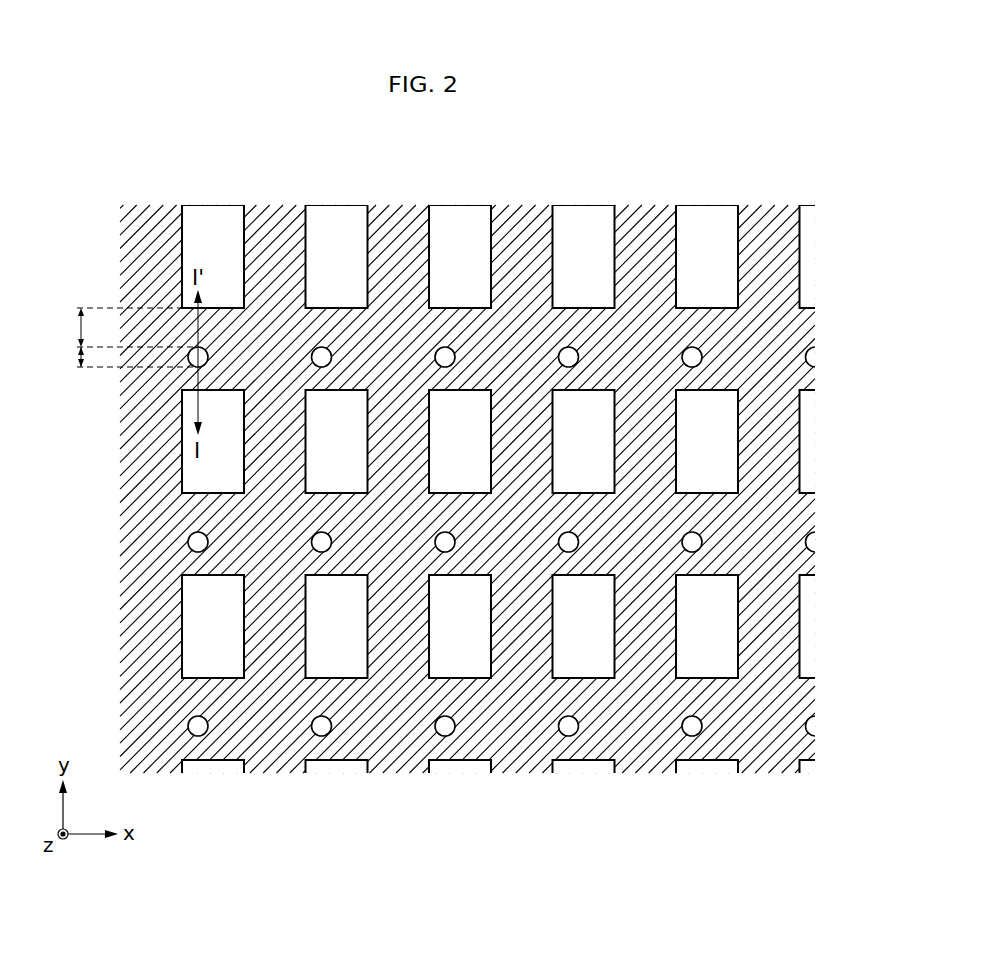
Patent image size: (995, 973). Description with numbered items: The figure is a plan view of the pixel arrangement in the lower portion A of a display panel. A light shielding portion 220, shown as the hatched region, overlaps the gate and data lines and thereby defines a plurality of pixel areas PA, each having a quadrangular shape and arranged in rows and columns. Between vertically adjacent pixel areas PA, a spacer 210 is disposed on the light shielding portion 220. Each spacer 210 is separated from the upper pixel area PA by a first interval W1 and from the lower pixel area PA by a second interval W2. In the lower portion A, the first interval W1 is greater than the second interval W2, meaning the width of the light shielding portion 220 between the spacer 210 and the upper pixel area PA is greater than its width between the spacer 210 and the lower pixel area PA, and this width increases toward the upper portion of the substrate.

The lower portion A is at (459, 488).
The light shielding portion 220 is at (153, 257).
The pixel area PA is at (212, 205).
The spacer 210 is at (187, 542).
The first interval W1 is at (126, 327).
The second interval W2 is at (126, 369).